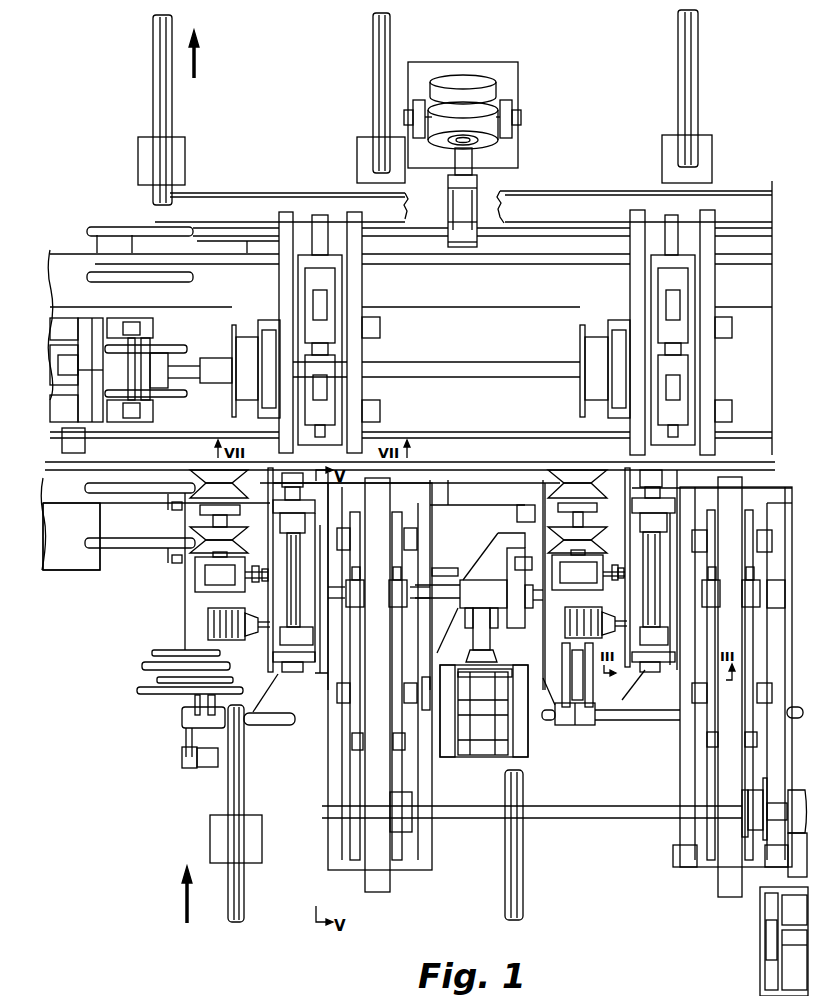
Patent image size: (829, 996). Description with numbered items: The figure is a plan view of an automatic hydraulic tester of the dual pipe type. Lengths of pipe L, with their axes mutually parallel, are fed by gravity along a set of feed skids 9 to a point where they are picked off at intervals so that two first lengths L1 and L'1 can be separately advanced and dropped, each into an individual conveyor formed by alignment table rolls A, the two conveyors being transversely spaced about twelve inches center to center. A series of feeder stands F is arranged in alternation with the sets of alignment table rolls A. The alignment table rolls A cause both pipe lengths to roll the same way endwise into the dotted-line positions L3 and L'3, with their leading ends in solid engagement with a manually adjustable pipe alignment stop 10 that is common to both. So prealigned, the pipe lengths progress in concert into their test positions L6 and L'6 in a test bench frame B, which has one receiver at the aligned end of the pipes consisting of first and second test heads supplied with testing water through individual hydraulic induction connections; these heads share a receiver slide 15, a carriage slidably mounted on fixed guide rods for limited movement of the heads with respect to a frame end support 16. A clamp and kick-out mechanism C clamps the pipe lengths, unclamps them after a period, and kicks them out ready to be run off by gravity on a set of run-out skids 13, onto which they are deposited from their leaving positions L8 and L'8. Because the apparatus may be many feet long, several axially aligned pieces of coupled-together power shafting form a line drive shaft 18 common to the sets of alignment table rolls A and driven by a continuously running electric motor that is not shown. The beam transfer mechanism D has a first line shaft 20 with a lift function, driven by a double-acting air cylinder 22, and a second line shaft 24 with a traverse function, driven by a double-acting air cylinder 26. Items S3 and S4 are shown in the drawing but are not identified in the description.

The run-out skids 13 is at (372, 79).
The leaving position of first pipe length L8 is at (108, 226).
The leaving position of second pipe length L'8 is at (140, 290).
The clamp and kick-out mechanism C is at (320, 220).
The receiver slide 15 is at (56, 412).
The test position of first pipe length L6 is at (186, 345).
The test position of second pipe length L'6 is at (150, 407).
The test bench frame B is at (457, 436).
The alignment table rolls A is at (242, 549).
The beam transfer mechanism D is at (390, 519).
The frame end support 16 is at (50, 500).
The pipe alignment stop 10 is at (85, 562).
The prealigned position of first pipe length L3 is at (135, 491).
The prealigned position of second pipe length L'3 is at (140, 557).
The switch S3 is at (172, 507).
The switch S4 is at (176, 564).
The line drive shaft 18 is at (448, 568).
The first line shaft 20 is at (455, 603).
The double-acting air cylinder 22 is at (495, 753).
The first pipe length L1 is at (155, 651).
The second pipe length L'1 is at (165, 659).
The lengths of pipe L is at (172, 693).
The feed skids 9 is at (244, 898).
The second line shaft 24 is at (665, 803).
The feeder stands F is at (660, 662).
The double-acting air cylinder 26 is at (790, 971).